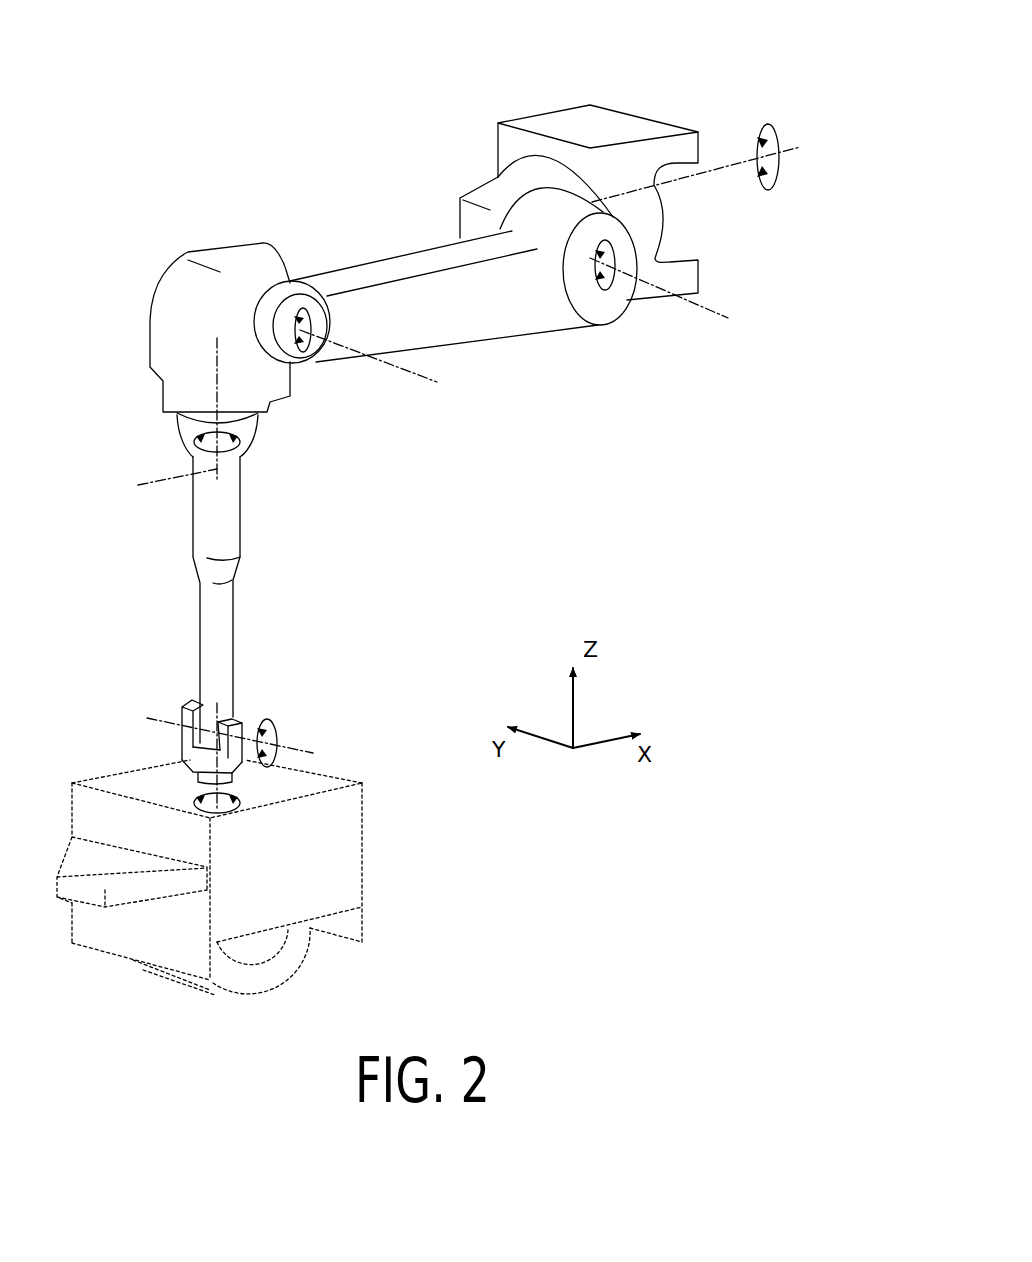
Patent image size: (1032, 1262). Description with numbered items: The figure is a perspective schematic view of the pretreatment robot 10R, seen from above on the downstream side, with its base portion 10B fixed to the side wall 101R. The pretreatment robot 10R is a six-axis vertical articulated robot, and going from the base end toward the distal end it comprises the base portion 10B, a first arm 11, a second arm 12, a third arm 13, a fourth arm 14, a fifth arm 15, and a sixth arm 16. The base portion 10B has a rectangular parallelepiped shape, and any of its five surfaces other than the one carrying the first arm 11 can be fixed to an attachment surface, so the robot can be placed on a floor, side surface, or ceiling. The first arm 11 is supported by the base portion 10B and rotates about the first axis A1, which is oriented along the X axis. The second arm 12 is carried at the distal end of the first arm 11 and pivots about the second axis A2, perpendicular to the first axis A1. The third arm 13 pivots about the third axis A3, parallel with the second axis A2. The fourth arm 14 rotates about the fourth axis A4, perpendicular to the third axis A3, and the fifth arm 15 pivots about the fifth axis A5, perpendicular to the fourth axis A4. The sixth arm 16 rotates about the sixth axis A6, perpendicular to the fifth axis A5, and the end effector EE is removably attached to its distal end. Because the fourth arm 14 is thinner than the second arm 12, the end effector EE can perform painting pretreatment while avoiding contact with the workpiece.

The side wall 101R is at (360, 89).
The pretreatment robot 10R is at (383, 467).
The base portion 10B is at (620, 133).
The first arm 11 is at (498, 197).
The second arm 12 is at (455, 322).
The third arm 13 is at (165, 318).
The fourth arm 14 is at (220, 600).
The fifth arm 15 is at (180, 710).
The sixth arm 16 is at (185, 766).
The first axis A1 is at (707, 173).
The second axis A2 is at (698, 307).
The third axis A3 is at (395, 364).
The fourth axis A4 is at (172, 464).
The fifth axis A5 is at (300, 743).
The sixth axis A6 is at (220, 833).
The end effector EE is at (340, 845).